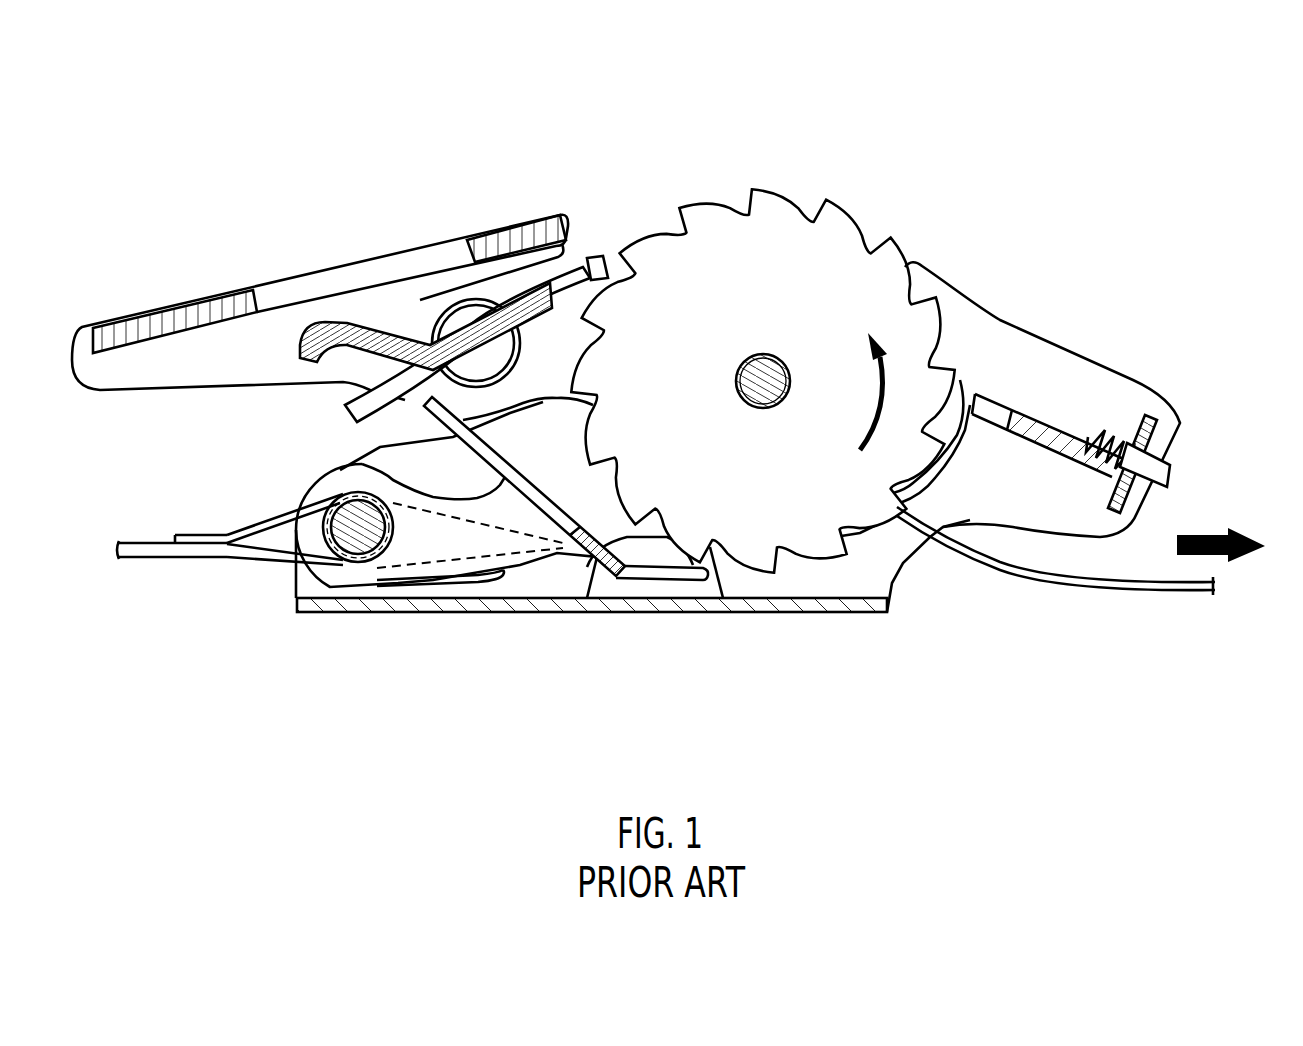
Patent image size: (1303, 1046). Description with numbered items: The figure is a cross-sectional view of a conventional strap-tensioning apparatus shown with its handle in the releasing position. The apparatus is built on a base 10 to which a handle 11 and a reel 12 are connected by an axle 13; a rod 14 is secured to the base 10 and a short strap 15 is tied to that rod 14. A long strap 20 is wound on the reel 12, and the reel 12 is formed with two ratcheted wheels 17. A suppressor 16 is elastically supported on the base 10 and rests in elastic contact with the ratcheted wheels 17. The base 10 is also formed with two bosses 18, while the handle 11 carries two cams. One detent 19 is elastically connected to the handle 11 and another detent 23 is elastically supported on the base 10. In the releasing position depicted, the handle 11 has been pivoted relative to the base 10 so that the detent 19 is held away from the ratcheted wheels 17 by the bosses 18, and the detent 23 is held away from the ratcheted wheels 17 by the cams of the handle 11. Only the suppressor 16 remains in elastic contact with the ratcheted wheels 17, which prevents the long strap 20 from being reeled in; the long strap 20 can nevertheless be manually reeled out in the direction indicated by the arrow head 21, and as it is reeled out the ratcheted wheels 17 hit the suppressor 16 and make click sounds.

The base 10 is at (497, 610).
The handle 11 is at (187, 320).
The reel 12 is at (797, 302).
The axle 13 is at (763, 383).
The rod 14 is at (315, 560).
The short strap 15 is at (142, 548).
The suppressor 16 is at (657, 570).
The ratcheted wheels 17 is at (762, 200).
The bosses 18 is at (602, 278).
The detent 19 is at (567, 288).
The long strap 20 is at (1075, 572).
The arrow head 21 is at (1193, 557).
The detent 23 is at (1023, 427).